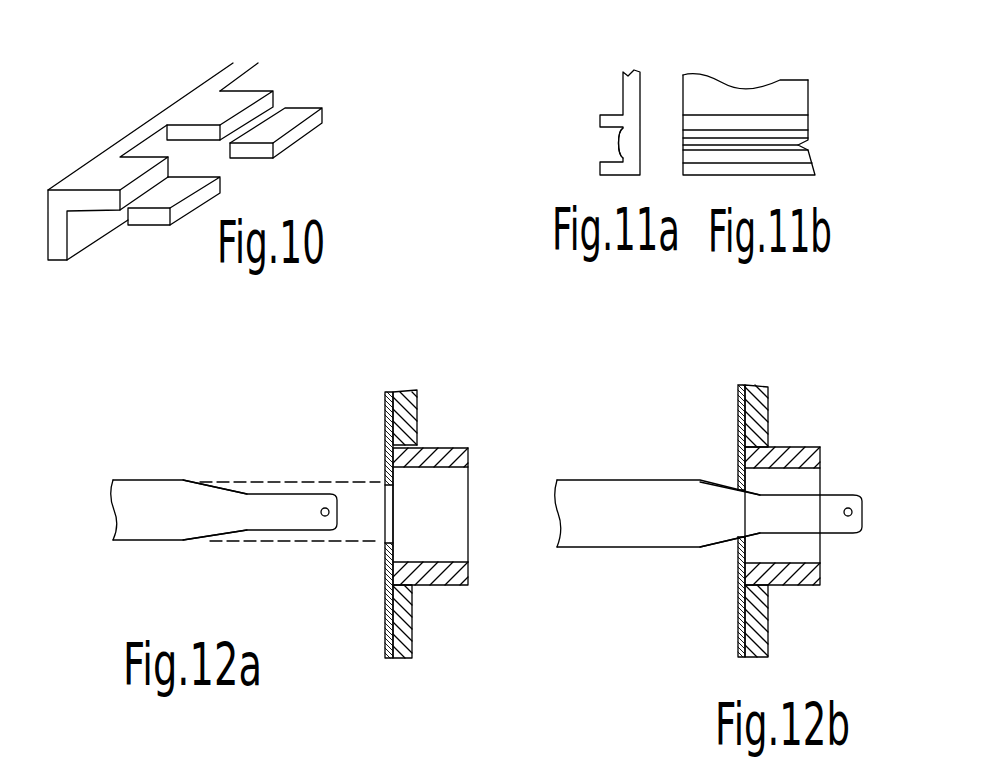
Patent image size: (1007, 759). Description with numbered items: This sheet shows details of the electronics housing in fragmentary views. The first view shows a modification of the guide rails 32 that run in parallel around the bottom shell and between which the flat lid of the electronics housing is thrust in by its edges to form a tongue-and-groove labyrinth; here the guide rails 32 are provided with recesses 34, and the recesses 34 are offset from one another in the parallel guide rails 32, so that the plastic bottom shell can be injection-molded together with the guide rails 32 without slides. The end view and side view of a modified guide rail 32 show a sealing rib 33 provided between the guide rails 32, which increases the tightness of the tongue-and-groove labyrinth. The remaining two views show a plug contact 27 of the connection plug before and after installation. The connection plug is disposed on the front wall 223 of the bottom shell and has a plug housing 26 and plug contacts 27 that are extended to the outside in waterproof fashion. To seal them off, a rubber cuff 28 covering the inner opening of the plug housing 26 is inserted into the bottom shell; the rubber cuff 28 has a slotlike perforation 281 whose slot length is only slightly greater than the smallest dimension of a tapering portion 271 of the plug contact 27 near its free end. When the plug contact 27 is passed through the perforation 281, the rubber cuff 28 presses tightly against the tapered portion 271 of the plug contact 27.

In FIG. 10, the guide rail 32 is at (95, 168).
In FIG. 11A, the guide rail 32 is at (612, 112).
In FIG. 11B, the guide rail 32 is at (753, 122).
In FIG. 11A, the sealing rib 33 is at (607, 145).
In FIG. 11B, the sealing rib 33 is at (802, 145).
In FIG. 10, the recess 34 is at (158, 138).
In FIG. 12A, the plug housing 26 is at (447, 445).
In FIG. 12B, the plug housing 26 is at (822, 448).
In FIG. 12A, the plug contact 27 is at (142, 495).
In FIG. 12B, the plug contact 27 is at (618, 500).
In FIG. 12A, the tapering portion 271 is at (208, 480).
In FIG. 12B, the tapering portion 271 is at (723, 485).
In FIG. 12A, the rubber cuff 28 is at (385, 420).
In FIG. 12B, the rubber cuff 28 is at (737, 598).
In FIG. 12A, the slotlike perforation 281 is at (385, 527).
In FIG. 12B, the slotlike perforation 281 is at (737, 540).
In FIG. 12A, the front wall 223 is at (410, 407).
In FIG. 12B, the front wall 223 is at (770, 390).